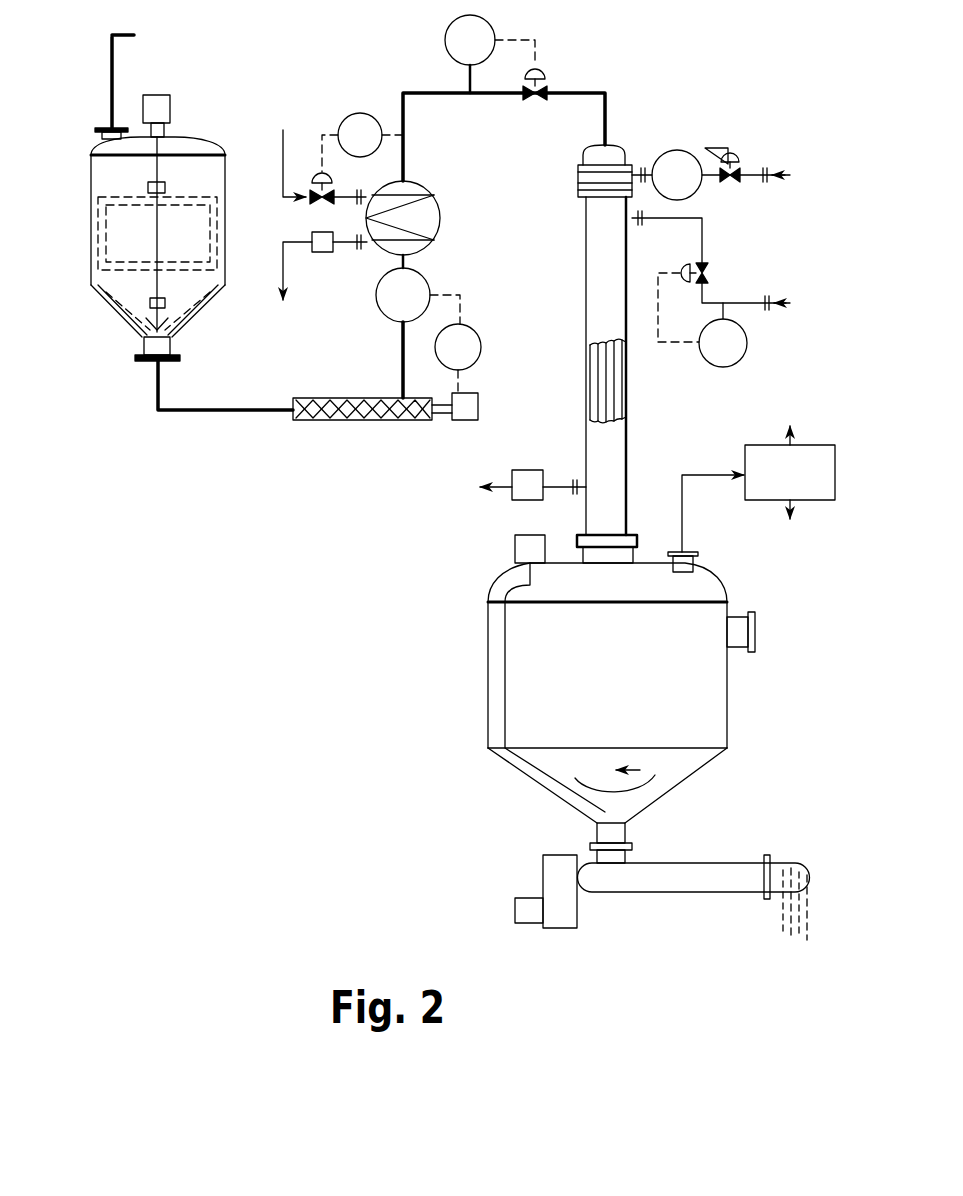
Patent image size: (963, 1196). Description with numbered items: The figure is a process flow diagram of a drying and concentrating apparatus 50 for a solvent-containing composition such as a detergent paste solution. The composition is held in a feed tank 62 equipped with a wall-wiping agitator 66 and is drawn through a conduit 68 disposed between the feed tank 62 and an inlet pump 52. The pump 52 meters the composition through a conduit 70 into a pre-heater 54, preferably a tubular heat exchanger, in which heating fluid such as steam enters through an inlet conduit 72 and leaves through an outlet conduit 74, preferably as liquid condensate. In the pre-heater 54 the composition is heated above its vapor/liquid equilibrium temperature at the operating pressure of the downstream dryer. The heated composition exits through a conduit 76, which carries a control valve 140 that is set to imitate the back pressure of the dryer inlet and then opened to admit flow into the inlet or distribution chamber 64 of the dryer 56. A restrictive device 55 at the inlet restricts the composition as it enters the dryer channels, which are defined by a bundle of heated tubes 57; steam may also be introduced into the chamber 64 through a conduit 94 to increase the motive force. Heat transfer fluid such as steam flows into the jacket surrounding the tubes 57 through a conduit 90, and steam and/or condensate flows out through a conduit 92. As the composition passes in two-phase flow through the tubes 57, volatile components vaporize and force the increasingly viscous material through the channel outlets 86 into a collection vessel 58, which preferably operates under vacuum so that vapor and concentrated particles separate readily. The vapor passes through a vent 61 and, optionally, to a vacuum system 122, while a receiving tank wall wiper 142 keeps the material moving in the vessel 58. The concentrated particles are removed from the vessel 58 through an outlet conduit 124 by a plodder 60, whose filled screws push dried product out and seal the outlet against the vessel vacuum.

The apparatus 50 is at (394, 486).
The inlet pump 52 is at (293, 421).
The pre-heater 54 is at (421, 178).
The restrictive device 55 is at (573, 178).
The dryer 56 is at (585, 262).
The dryer tubes 57 is at (589, 386).
The collection vessel 58 is at (722, 756).
The plodder 60 is at (639, 896).
The vent 61 is at (699, 473).
The feed tank 62 is at (91, 190).
The dryer inlet chamber 64 is at (608, 153).
The wall-wiping agitator 66 is at (100, 262).
The conduit 68 is at (183, 412).
The conduit 70 is at (400, 344).
The inlet conduit 72 is at (283, 150).
The outlet conduit 74 is at (288, 274).
The conduit 76 is at (418, 90).
The channel outlets 86 is at (643, 531).
The conduit 90 is at (748, 305).
The conduit 92 is at (500, 490).
The conduit 94 is at (755, 172).
The vacuum system 122 is at (822, 450).
The outlet conduit 124 is at (630, 836).
The control valve 140 is at (548, 85).
The receiving tank wall wiper 142 is at (500, 668).